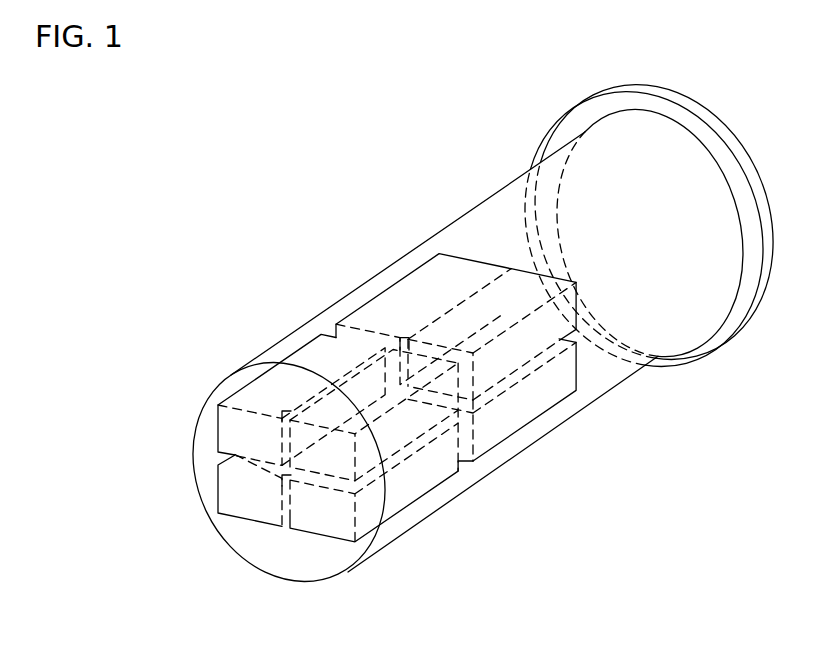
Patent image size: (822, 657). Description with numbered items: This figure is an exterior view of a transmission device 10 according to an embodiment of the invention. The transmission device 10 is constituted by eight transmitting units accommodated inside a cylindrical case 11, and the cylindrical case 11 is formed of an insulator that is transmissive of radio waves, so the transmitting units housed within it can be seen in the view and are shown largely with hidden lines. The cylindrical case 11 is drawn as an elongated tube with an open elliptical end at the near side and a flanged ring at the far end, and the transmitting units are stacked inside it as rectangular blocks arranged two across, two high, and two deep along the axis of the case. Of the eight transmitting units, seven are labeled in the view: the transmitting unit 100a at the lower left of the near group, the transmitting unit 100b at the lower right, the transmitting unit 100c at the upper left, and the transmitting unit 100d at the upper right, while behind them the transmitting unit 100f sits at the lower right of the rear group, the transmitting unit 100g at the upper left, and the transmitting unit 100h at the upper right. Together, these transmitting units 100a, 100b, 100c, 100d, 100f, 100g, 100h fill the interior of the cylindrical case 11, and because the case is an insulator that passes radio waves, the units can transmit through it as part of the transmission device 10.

The transmission device 10 is at (268, 192).
The cylindrical case 11 is at (458, 221).
The transmitting unit 100a is at (217, 493).
The transmitting unit 100b is at (333, 538).
The transmitting unit 100c is at (282, 386).
The transmitting unit 100d is at (437, 462).
The transmitting unit 100f is at (517, 437).
The transmitting unit 100g is at (345, 285).
The transmitting unit 100h is at (566, 355).